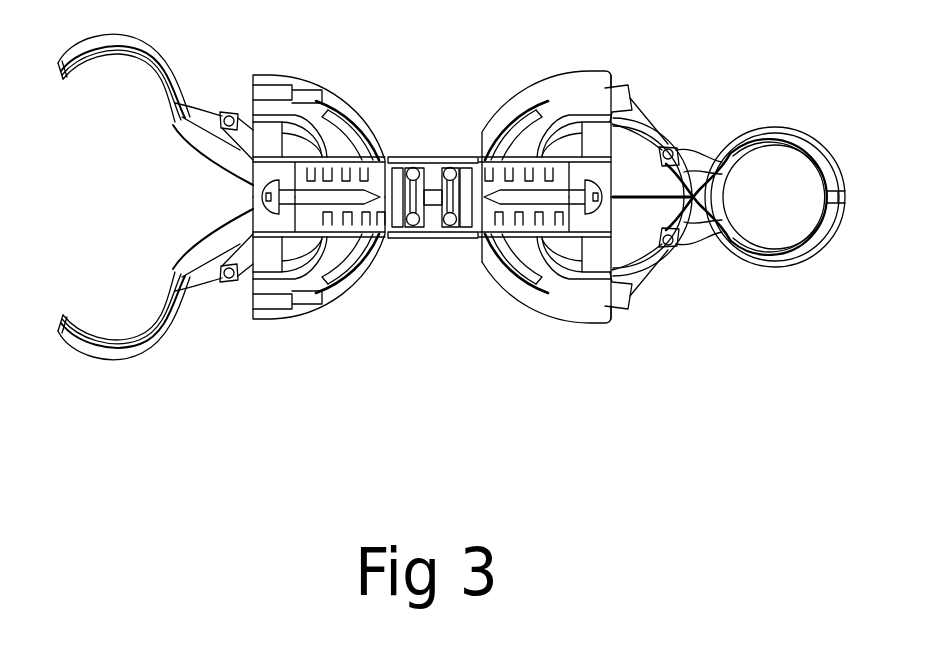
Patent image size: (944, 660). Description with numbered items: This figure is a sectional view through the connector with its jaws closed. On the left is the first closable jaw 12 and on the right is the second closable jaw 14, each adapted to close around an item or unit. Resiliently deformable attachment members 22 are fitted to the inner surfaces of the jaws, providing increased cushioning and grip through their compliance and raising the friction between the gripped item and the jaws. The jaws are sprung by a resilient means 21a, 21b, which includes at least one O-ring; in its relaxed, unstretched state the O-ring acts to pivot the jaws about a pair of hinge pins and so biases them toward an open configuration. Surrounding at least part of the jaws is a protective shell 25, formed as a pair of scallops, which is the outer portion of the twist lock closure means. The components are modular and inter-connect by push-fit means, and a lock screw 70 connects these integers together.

The first closable jaw 12 is at (137, 358).
The second closable jaw 14 is at (793, 262).
The resilient means 21a is at (232, 280).
The resilient means 21b is at (671, 150).
The resiliently deformable attachment member 22 is at (117, 57).
The protective shell 25 is at (258, 204).
The lock screw 70 is at (600, 208).